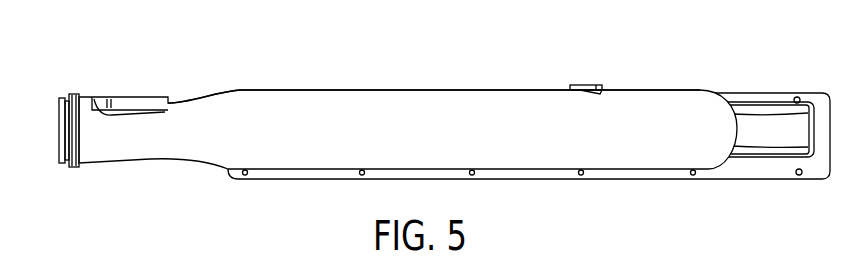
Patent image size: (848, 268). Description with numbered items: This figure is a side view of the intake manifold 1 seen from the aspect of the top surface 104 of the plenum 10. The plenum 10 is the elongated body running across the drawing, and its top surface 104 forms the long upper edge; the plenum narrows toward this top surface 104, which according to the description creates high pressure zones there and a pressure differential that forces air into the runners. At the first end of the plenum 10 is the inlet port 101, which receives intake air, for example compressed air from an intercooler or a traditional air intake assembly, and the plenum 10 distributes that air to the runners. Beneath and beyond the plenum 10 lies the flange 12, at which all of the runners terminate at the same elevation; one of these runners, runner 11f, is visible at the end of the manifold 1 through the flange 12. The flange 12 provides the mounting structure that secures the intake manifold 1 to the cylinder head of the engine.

The intake manifold 1 is at (425, 118).
The plenum 10 is at (447, 98).
The inlet port 101 is at (58, 128).
The top surface 104 is at (313, 91).
The runner 11f is at (767, 128).
The flange 12 is at (755, 168).